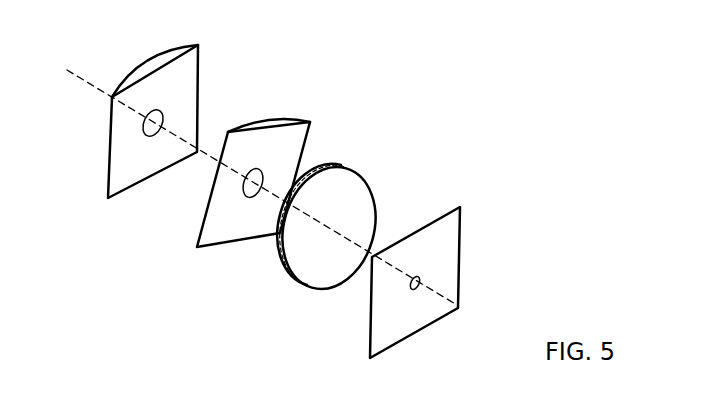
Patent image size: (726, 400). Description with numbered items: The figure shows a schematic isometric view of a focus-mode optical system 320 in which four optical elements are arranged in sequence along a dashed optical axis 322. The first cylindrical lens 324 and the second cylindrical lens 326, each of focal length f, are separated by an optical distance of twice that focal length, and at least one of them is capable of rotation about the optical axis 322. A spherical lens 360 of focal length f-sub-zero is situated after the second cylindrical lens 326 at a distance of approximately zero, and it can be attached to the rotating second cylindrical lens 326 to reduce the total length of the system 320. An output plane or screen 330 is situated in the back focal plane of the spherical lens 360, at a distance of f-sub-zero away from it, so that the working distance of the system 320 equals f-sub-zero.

The focus-mode optical system 320 is at (475, 65).
The optical axis 322 is at (83, 78).
The first cylindrical lens 324 is at (105, 168).
The second cylindrical lens 326 is at (197, 225).
The spherical lens 360 is at (282, 267).
The output plane or screen 330 is at (370, 332).